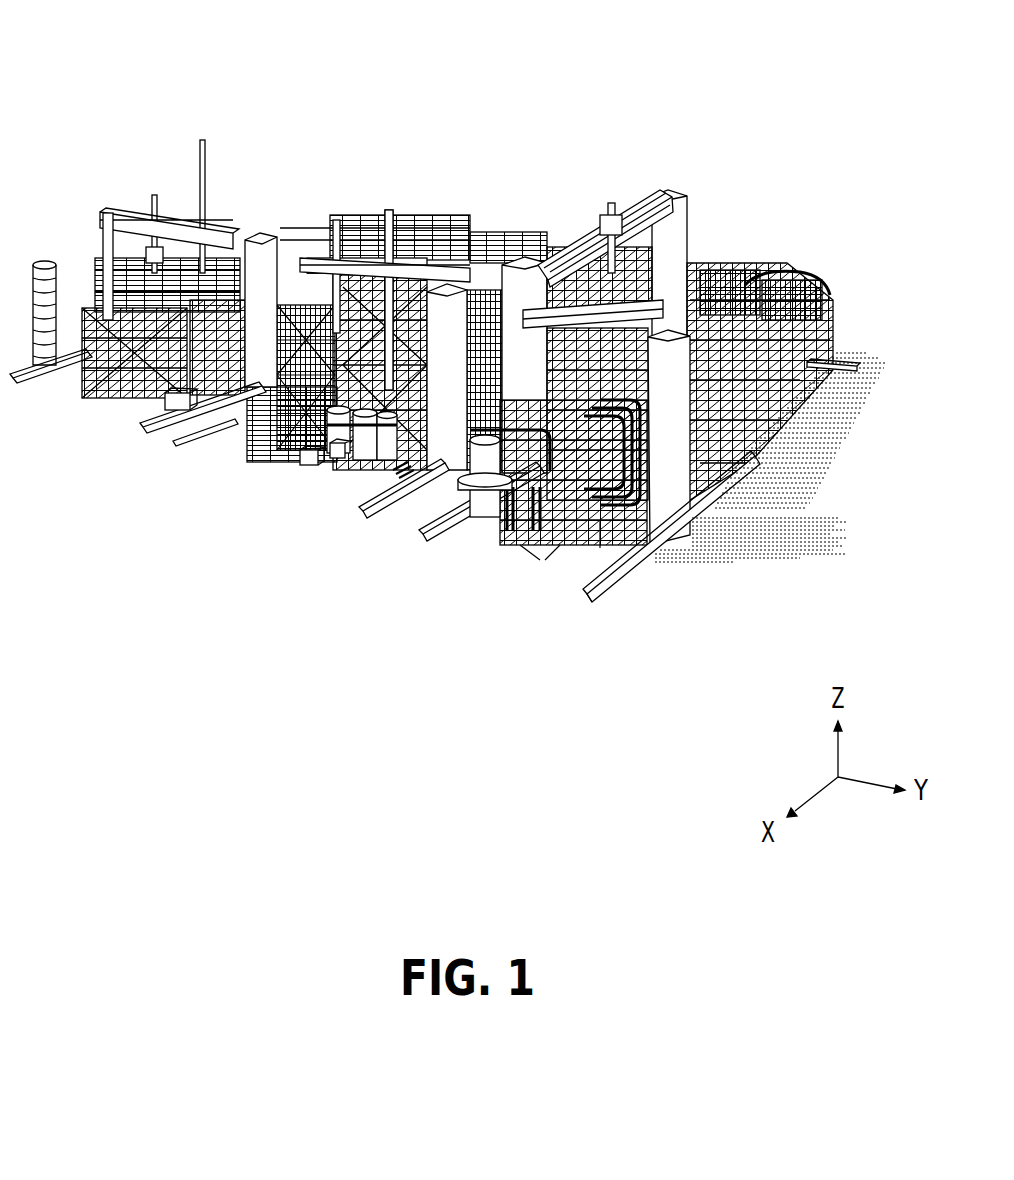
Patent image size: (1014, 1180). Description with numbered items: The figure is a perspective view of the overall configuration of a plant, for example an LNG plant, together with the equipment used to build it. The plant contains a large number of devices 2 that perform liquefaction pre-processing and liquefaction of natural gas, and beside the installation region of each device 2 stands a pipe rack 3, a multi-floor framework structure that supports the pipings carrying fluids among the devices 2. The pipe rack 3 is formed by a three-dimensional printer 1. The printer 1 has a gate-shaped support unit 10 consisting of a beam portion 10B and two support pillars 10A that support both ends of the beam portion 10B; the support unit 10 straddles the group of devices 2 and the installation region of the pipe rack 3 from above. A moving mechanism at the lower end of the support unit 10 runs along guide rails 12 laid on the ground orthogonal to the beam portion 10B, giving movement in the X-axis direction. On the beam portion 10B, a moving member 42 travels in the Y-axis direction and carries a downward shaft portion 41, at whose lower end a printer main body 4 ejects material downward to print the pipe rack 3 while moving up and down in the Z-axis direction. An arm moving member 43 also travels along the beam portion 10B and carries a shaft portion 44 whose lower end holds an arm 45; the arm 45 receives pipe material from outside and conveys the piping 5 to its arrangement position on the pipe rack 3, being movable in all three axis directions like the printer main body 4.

The 3D printer 1 is at (163, 180).
The device 2 is at (100, 408).
The pipe rack 3 is at (690, 268).
The printer main body 4 is at (578, 540).
The piping 5 is at (345, 462).
The support unit 10 is at (753, 440).
The support pillar 10A is at (672, 490).
The beam portion 10B is at (582, 262).
The guide rail 12 is at (622, 583).
The shaft portion 41 is at (745, 282).
The moving member 42 is at (730, 268).
The arm moving member 43 is at (430, 232).
The shaft portion 44 is at (368, 232).
The arm 45 is at (405, 462).